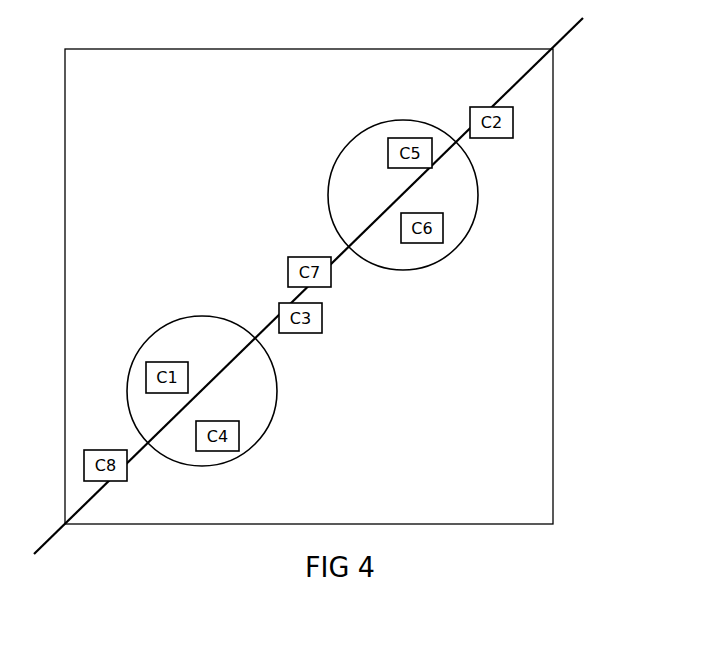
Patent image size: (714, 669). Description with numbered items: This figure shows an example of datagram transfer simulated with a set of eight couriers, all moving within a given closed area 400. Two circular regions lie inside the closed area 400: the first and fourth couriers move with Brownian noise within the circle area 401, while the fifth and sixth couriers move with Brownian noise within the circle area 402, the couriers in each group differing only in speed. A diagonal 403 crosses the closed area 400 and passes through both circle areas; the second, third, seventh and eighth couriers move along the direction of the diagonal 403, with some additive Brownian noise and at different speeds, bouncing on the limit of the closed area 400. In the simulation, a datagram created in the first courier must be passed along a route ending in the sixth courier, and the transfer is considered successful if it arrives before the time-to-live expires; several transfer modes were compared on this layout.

The closed area 400 is at (553, 285).
The circle area 401 is at (280, 390).
The circle area 402 is at (406, 120).
The diagonal 403 is at (508, 93).